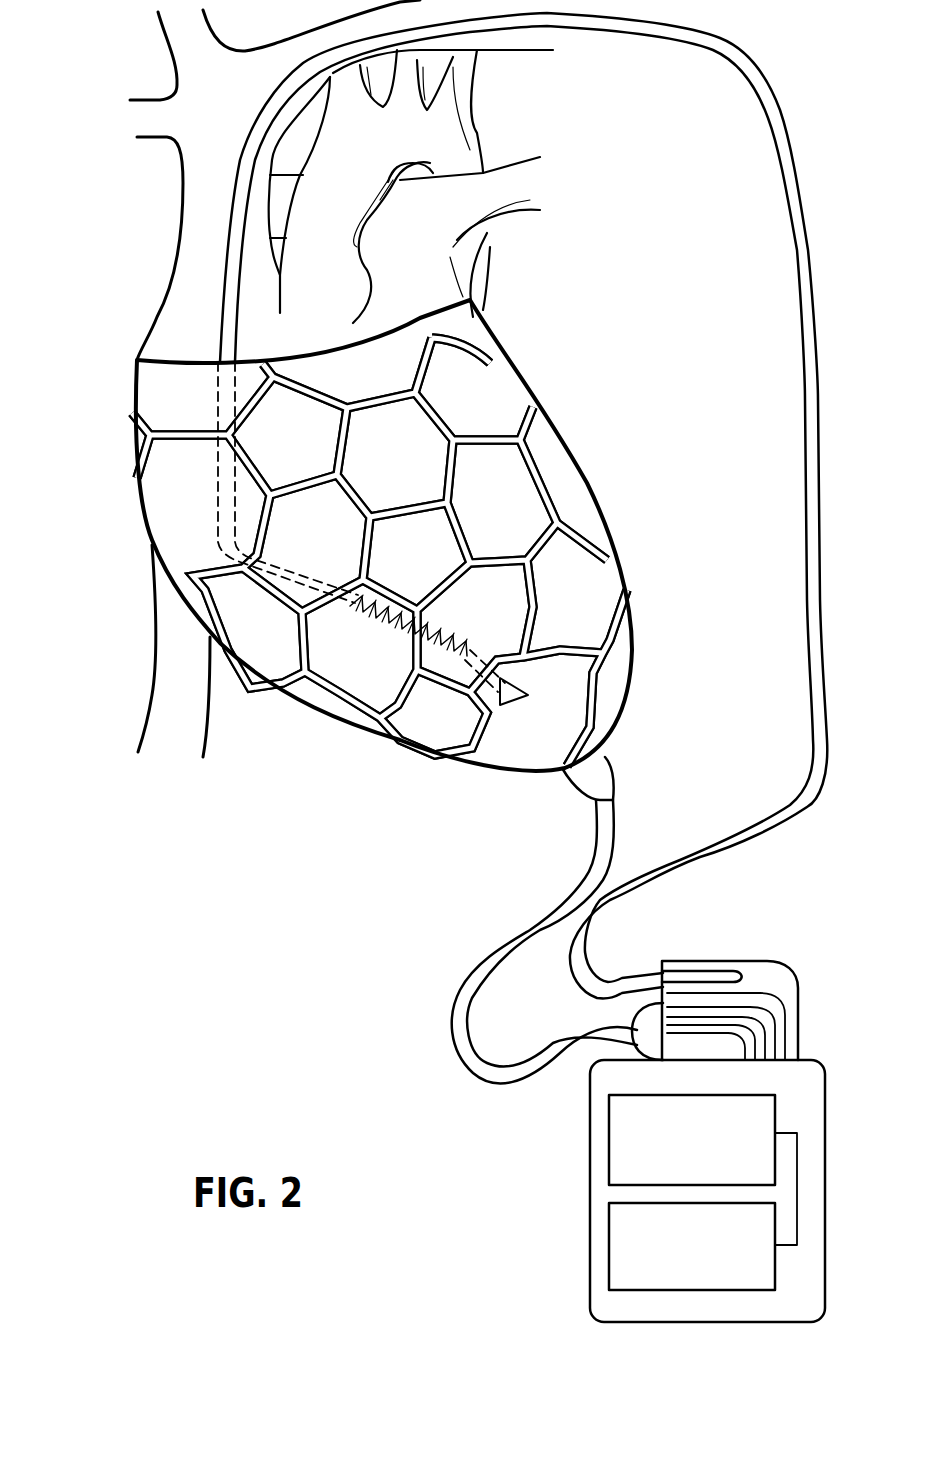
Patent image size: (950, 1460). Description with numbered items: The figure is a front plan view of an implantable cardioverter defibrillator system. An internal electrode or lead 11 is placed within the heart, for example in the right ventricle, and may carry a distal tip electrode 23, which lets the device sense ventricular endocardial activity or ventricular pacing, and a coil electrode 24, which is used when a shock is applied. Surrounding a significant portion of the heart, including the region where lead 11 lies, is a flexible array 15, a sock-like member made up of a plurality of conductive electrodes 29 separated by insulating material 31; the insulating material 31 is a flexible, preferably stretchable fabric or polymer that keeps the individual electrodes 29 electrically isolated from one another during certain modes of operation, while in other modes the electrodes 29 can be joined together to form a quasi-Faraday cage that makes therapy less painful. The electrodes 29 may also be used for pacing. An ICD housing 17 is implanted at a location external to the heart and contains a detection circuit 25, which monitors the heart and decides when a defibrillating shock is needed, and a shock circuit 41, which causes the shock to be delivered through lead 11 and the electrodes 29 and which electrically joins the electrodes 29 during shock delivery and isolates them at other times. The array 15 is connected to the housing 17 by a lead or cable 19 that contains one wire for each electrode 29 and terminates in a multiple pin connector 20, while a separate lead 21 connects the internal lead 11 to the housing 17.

The internal electrode or lead 11 is at (387, 633).
The flexible array 15 is at (560, 340).
The ICD housing 17 is at (810, 1167).
The electrical lead 19 is at (445, 1015).
The multiple pin connector 20 is at (595, 1070).
The electrical lead 21 is at (817, 550).
The distal tip electrode 23 is at (517, 677).
The coil electrode 24 is at (372, 627).
The detection circuit 25 is at (609, 1137).
The electrodes 29 is at (180, 377).
The insulating material 31 is at (143, 425).
The shock circuit 41 is at (609, 1227).